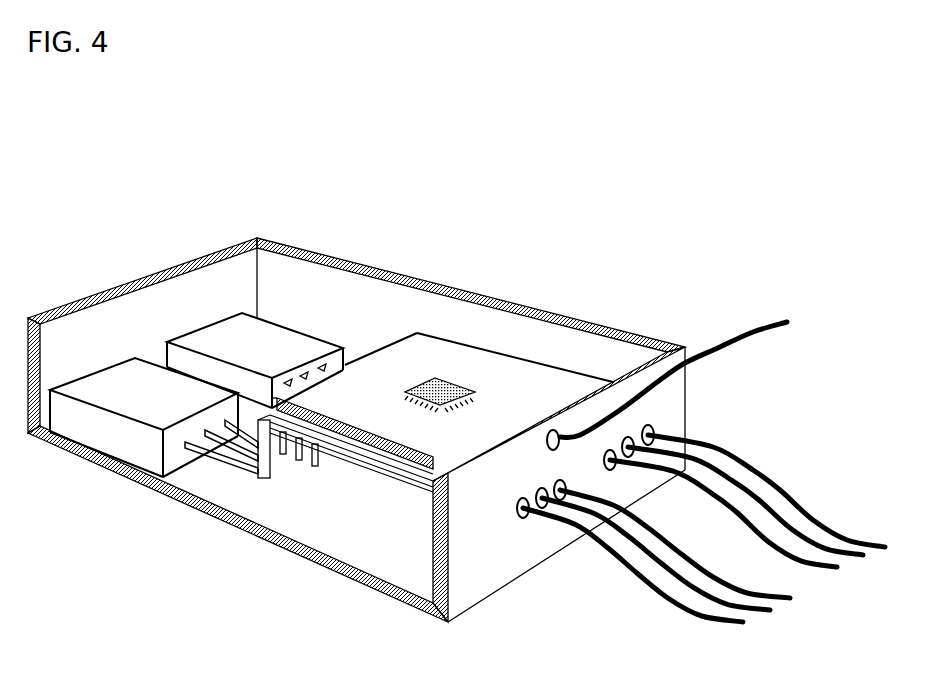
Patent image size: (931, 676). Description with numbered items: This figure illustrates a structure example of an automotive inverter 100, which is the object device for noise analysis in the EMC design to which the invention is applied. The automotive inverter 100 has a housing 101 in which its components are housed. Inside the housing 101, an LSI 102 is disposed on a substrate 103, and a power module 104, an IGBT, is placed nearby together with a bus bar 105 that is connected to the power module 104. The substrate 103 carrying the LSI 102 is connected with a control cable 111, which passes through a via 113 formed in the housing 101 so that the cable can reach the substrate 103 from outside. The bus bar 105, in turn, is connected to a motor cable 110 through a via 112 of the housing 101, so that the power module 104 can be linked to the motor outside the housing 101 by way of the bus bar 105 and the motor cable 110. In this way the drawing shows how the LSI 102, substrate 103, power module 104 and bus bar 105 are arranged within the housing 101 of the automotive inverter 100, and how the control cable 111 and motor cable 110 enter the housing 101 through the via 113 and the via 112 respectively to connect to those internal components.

The automotive inverter 100 is at (270, 217).
The housing 101 is at (363, 263).
The LSI 102 is at (440, 376).
The substrate 103 is at (518, 362).
The power module 104 is at (135, 408).
The bus bar 105 is at (337, 460).
The motor cable 110 is at (752, 470).
The control cable 111 is at (740, 332).
The via 112 is at (653, 430).
The via 113 is at (548, 448).